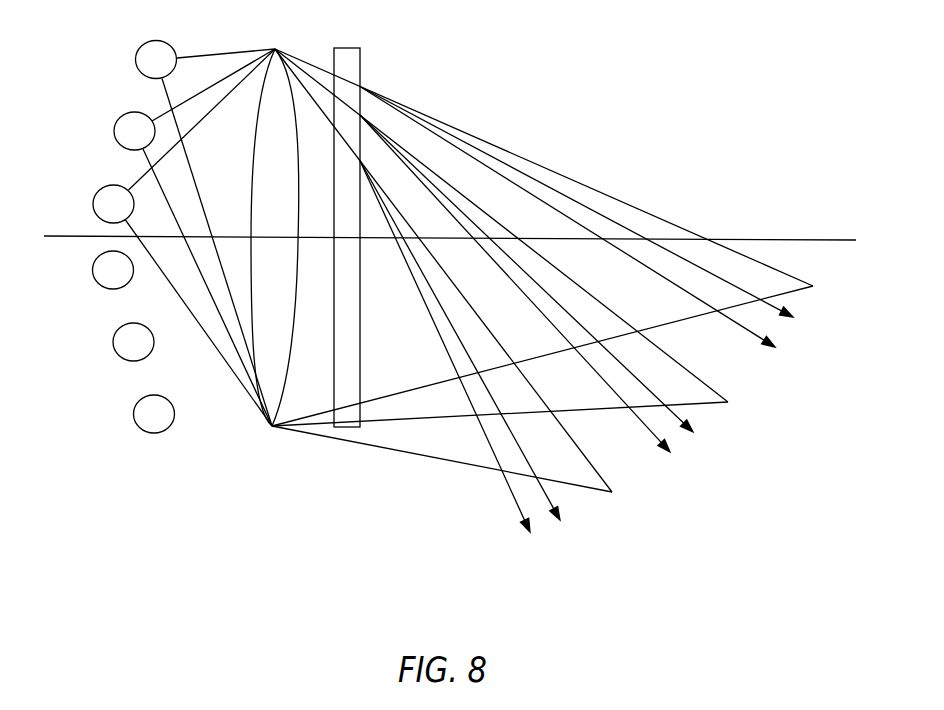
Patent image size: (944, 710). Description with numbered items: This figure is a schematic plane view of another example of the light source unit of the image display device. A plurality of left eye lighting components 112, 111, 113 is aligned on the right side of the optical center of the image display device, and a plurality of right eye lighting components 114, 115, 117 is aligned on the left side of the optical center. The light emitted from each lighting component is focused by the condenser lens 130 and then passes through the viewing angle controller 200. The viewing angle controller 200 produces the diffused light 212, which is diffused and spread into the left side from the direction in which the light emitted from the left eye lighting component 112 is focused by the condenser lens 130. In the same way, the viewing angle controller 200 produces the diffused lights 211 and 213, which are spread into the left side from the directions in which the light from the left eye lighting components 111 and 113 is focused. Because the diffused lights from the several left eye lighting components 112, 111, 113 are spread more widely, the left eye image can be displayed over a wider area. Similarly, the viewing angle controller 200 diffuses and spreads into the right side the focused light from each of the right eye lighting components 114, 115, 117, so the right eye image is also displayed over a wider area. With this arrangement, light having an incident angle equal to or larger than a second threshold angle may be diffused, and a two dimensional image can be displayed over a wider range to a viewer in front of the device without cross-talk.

The left eye lighting component 111 is at (114, 131).
The left eye lighting component 112 is at (93, 204).
The left eye lighting component 113 is at (135, 60).
The right eye lighting component 114 is at (93, 270).
The right eye lighting component 115 is at (113, 342).
The right eye lighting component 117 is at (134, 414).
The condenser lens 130 is at (253, 130).
The viewing angle controller 200 is at (352, 48).
The diffused light 211 is at (561, 298).
The diffused light 212 is at (613, 227).
The diffused light 213 is at (483, 372).